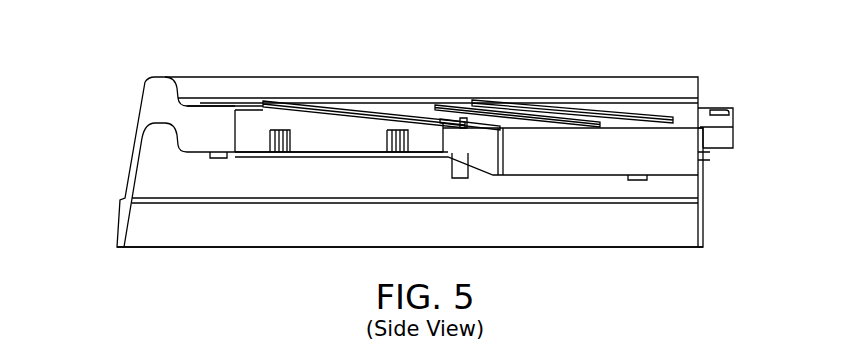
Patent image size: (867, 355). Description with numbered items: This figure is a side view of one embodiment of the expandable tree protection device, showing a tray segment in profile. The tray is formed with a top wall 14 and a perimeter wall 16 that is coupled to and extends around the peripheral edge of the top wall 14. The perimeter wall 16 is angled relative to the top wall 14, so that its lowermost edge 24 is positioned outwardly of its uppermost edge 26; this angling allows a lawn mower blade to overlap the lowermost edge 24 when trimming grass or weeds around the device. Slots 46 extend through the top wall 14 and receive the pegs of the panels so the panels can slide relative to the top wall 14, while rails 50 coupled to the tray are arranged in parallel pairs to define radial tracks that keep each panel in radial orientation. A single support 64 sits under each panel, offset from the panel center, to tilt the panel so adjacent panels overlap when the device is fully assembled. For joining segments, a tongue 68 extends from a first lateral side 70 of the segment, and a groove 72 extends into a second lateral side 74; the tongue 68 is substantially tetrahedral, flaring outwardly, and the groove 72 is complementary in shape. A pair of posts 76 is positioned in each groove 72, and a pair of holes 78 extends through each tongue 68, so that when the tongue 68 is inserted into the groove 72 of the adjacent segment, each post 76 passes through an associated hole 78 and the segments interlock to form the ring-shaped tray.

The top wall 14 is at (670, 110).
The perimeter wall 16 is at (133, 155).
The lowermost edge 24 is at (118, 247).
The uppermost edge 26 is at (152, 79).
The slot 46 is at (483, 122).
The rail 50 is at (425, 117).
The support 64 is at (532, 117).
The tongue 68 is at (733, 112).
The first lateral side 70 is at (706, 160).
The groove 72 is at (333, 128).
The second lateral side 74 is at (207, 117).
The post 76 is at (273, 130).
The hole 78 is at (718, 110).